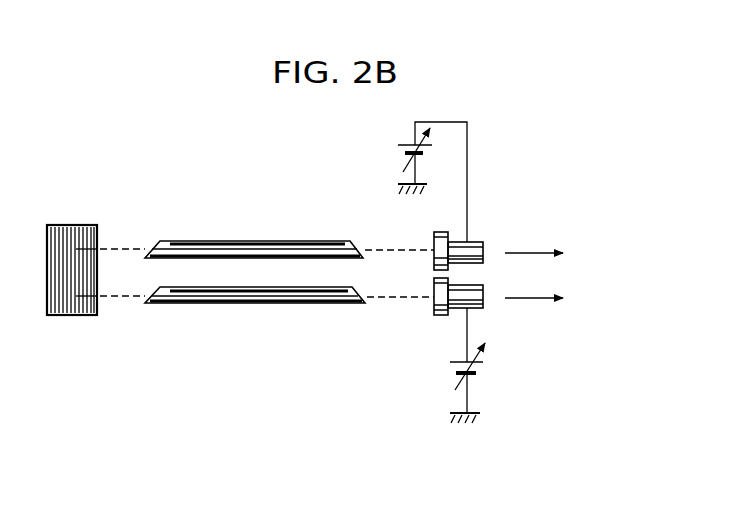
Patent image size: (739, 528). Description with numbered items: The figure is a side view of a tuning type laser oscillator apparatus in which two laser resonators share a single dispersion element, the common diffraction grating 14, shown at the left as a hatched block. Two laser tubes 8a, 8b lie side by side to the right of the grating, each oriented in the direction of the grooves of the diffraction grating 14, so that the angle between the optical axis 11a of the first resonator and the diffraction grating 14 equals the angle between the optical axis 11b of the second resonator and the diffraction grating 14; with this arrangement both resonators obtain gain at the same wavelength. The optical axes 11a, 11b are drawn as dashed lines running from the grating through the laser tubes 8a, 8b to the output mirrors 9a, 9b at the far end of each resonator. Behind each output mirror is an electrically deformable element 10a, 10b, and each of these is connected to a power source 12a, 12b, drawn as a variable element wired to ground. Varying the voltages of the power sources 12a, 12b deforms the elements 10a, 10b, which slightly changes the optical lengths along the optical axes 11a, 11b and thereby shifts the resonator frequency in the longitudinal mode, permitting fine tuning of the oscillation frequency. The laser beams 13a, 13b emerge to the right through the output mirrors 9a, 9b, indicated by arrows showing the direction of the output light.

The common diffraction grating 14 is at (65, 225).
The optical axis of resonator 11a is at (118, 246).
The optical axis of resonator 11b is at (118, 297).
The laser tube 8a is at (253, 241).
The laser tube 8b is at (228, 303).
The output mirror 9a is at (434, 240).
The output mirror 9b is at (437, 315).
The electrically deformable element 10a is at (477, 242).
The electrically deformable element 10b is at (474, 308).
The power source 12a is at (398, 152).
The power source 12b is at (451, 368).
The laser beam 13a is at (533, 253).
The laser beam 13b is at (542, 298).